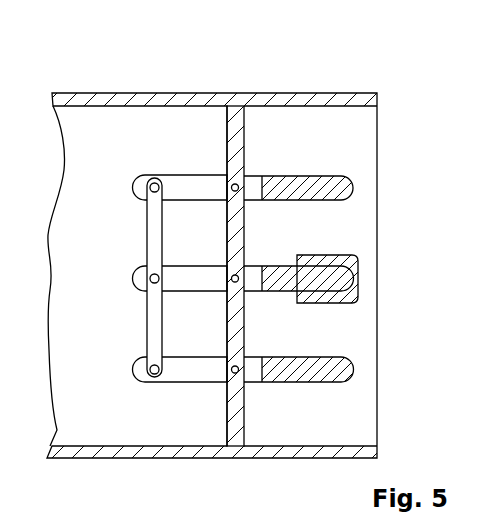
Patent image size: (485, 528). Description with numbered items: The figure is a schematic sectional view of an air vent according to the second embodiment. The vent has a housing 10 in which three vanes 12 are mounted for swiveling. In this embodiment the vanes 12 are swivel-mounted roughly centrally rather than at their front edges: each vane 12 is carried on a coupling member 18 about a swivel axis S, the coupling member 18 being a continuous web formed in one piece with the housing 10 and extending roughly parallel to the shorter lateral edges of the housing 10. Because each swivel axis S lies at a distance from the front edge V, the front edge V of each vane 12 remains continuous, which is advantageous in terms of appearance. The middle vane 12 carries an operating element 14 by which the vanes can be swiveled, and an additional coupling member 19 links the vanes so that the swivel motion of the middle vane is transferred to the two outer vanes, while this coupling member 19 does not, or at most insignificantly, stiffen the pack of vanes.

The housing 10 is at (172, 104).
The vanes 12 is at (289, 185).
The operating element 14 is at (352, 266).
The coupling member 18 is at (241, 240).
The additional coupling member 19 is at (147, 225).
The swivel axis S is at (231, 185).
The front edge V is at (353, 189).